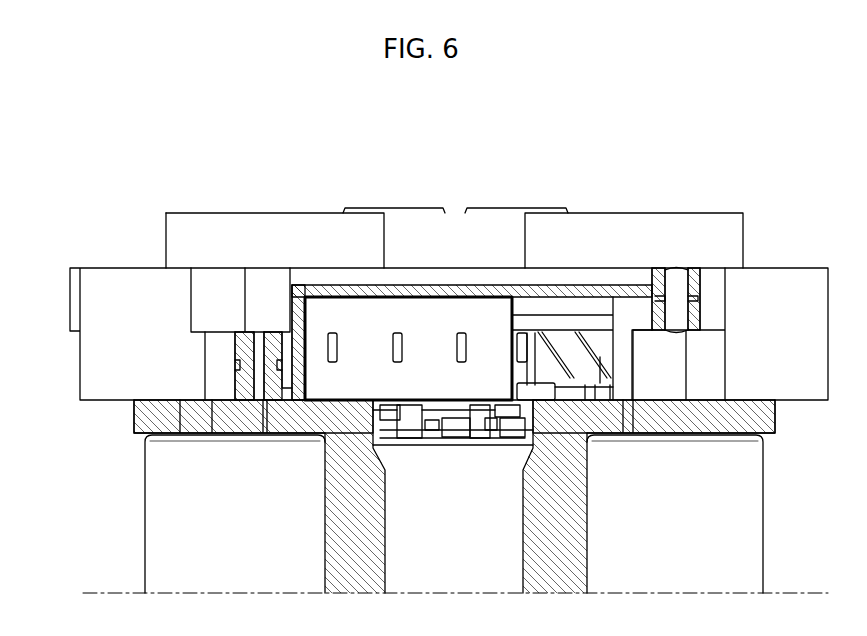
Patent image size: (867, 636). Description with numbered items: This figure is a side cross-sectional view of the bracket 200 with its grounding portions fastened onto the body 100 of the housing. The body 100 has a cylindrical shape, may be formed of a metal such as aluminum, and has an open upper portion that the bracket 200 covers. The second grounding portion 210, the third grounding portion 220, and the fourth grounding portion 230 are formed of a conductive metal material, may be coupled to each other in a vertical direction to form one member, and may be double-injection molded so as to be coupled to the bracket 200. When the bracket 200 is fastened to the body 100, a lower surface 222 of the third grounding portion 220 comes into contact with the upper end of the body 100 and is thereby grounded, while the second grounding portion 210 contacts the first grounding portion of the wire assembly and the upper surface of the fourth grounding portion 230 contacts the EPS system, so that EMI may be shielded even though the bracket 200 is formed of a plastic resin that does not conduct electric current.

The body 100 is at (245, 425).
The bracket 200 is at (632, 213).
The second grounding portion 210 is at (453, 285).
The third grounding portion 220 is at (242, 330).
The lower surface 222 is at (242, 400).
The fourth grounding portion 230 is at (692, 273).